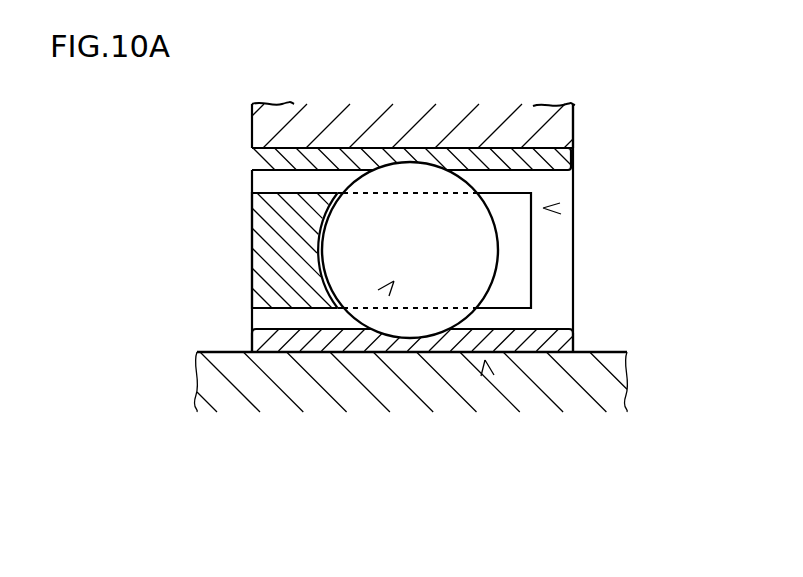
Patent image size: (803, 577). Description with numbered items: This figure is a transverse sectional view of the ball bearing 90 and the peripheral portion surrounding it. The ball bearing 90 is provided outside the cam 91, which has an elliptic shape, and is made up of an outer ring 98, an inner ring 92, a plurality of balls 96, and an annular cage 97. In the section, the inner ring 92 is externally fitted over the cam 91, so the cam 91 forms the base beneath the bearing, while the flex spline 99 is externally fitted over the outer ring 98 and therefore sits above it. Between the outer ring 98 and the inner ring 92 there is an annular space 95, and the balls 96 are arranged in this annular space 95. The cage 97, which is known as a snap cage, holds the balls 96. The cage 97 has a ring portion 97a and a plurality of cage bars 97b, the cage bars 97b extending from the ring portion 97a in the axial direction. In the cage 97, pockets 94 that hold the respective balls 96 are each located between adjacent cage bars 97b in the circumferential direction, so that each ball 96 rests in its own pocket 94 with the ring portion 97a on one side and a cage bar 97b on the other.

The ball bearing 90 is at (485, 360).
The cam 91 is at (217, 384).
The inner ring 92 is at (550, 340).
The pocket 94 is at (393, 282).
The annular space 95 is at (548, 206).
The ball 96 is at (425, 187).
The cage 97 is at (412, 184).
The ring portion 97a is at (262, 228).
The cage bar 97b is at (531, 257).
The outer ring 98 is at (252, 161).
The flex spline 99 is at (562, 127).